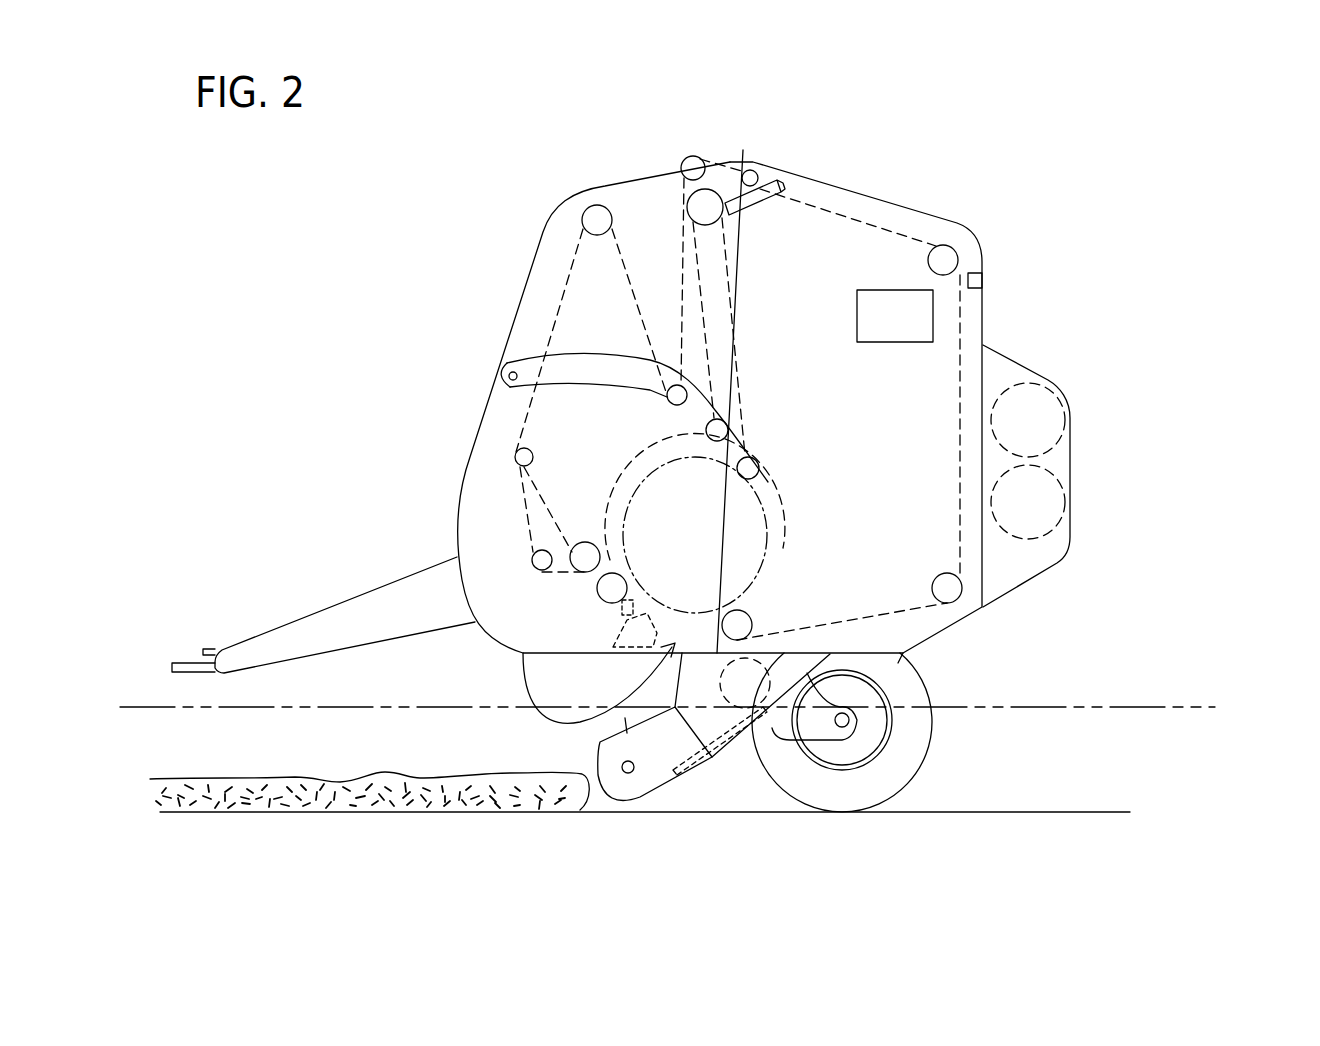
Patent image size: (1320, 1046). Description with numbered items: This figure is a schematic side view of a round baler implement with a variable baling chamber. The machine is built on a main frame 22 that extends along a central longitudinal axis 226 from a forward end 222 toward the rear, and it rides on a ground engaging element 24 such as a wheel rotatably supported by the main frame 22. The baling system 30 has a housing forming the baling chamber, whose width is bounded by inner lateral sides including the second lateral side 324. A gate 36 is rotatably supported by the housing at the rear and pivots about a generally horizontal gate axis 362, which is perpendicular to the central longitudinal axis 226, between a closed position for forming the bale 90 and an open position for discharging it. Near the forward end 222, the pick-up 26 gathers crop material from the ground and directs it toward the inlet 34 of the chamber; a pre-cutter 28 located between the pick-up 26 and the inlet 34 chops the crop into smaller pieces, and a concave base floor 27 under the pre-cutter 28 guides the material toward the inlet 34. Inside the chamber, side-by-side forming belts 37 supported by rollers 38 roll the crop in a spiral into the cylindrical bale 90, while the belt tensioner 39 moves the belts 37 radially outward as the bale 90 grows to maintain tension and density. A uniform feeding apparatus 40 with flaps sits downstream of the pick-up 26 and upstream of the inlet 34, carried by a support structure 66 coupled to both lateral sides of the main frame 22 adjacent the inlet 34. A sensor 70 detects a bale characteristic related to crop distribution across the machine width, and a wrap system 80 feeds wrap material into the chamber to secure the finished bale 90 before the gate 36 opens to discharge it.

The main frame 22 is at (681, 464).
The ground engaging element 24 is at (900, 758).
The pick-up 26 is at (597, 770).
The base floor 27 is at (745, 703).
The pre-cutter 28 is at (755, 692).
The baling system 30 is at (672, 349).
The inlet 34 is at (560, 730).
The gate 36 is at (972, 206).
The forming belts 37 is at (562, 280).
The rollers 38 is at (520, 452).
The belt tensioner 39 is at (600, 365).
The uniform feeding apparatus 40 is at (604, 626).
The support structure 66 is at (620, 610).
The sensor 70 is at (911, 328).
The wrap system 80 is at (1070, 364).
The bale 90 is at (702, 539).
The forward end 222 is at (488, 664).
The central longitudinal axis 226 is at (1242, 705).
The second lateral side 324 is at (631, 442).
The gate axis 362 is at (742, 162).